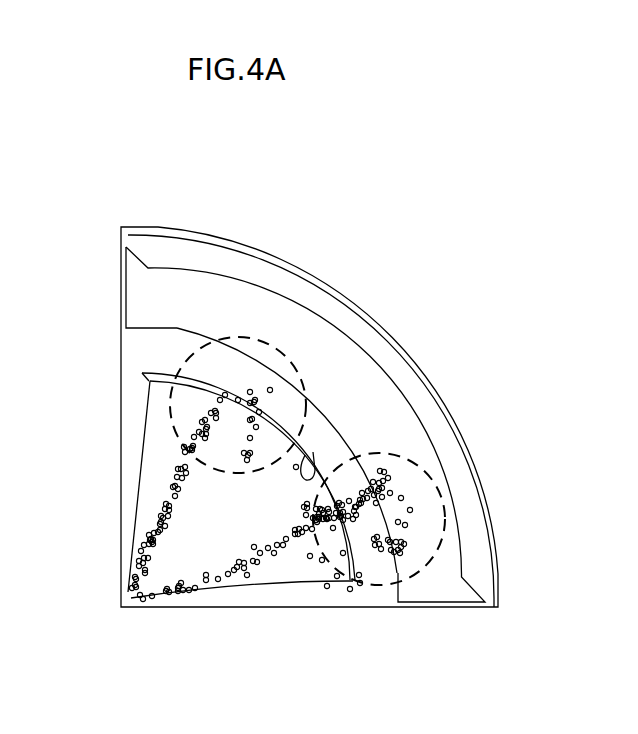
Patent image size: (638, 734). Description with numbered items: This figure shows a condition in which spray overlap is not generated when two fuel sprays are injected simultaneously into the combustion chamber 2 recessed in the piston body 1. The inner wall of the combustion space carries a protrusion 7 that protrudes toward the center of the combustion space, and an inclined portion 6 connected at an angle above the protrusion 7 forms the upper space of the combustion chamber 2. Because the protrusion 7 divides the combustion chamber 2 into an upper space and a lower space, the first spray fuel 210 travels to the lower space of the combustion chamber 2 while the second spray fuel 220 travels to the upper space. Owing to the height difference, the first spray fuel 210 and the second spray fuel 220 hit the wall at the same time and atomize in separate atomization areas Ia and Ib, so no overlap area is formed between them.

The piston body 1 is at (292, 268).
The combustion chamber 2 is at (216, 535).
The inclined portion 6 is at (340, 445).
The protrusion 7 is at (303, 458).
The atomization area Ia is at (200, 335).
The atomization area Ib is at (430, 563).
The first spray fuel 210 is at (165, 500).
The second spray fuel 220 is at (260, 557).